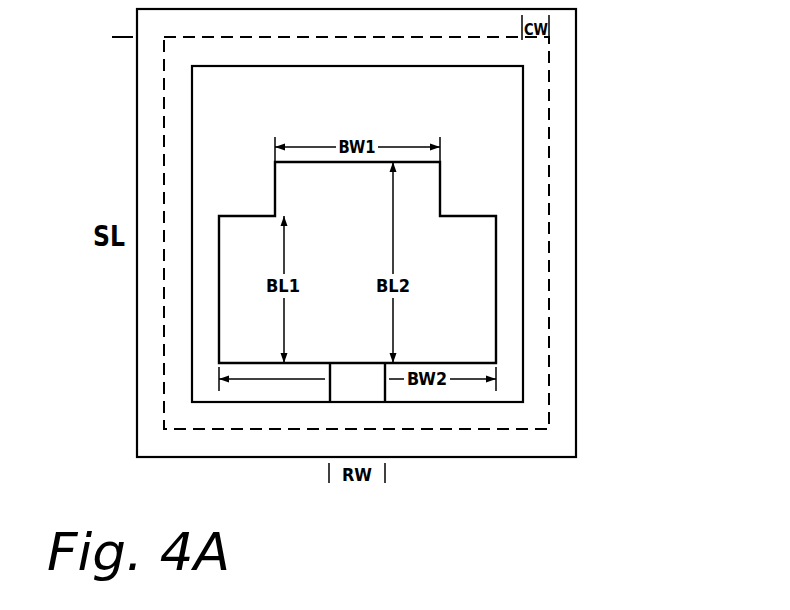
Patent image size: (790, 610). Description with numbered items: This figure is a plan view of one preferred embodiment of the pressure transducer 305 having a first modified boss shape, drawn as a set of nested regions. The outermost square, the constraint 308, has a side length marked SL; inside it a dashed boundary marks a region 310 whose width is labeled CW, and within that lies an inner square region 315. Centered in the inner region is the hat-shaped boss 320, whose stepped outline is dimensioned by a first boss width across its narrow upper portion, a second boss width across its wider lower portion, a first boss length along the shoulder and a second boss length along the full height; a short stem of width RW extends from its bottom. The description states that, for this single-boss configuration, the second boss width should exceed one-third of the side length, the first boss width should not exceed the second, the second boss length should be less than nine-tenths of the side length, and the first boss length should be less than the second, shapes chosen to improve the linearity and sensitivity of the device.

The test structure 305 is at (411, 233).
The outer region / substrate 308 is at (563, 268).
The well region 310 is at (537, 132).
The inner active region 315 is at (498, 114).
The T-shaped gate structure 320 is at (440, 190).